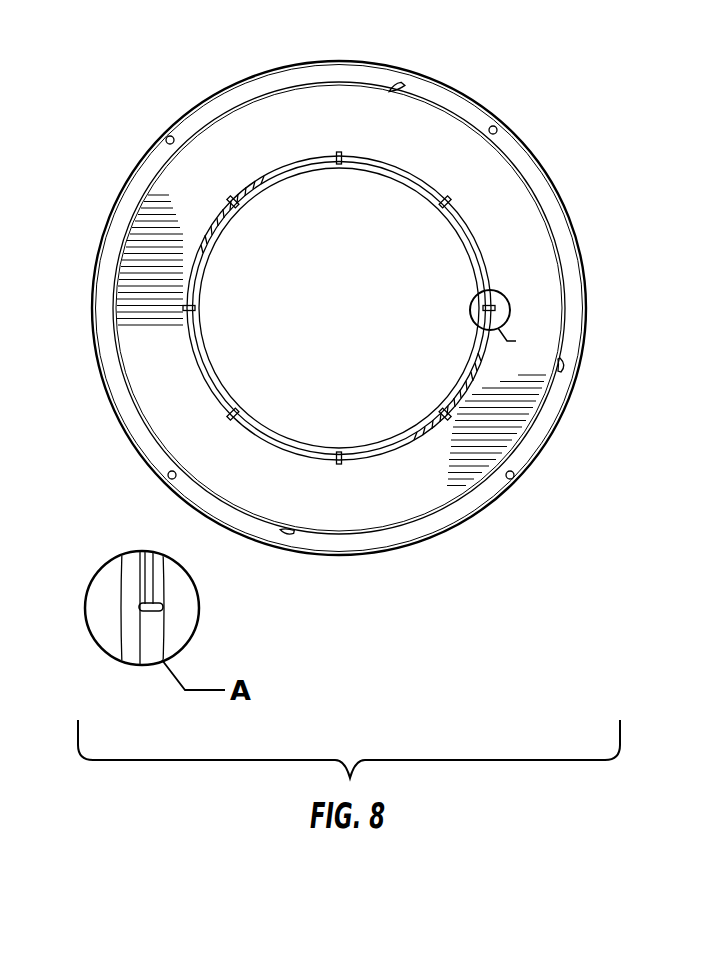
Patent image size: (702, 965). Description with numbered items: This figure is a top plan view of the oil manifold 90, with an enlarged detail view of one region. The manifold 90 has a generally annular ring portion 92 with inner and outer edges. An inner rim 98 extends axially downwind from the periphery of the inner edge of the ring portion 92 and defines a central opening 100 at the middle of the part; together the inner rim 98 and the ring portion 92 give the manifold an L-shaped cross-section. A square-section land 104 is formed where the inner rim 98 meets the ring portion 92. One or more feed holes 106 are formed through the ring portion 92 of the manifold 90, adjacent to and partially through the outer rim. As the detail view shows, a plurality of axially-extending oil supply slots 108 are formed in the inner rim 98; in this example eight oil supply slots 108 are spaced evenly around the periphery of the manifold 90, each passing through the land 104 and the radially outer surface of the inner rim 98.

The manifold 90 is at (480, 80).
The ring portion 92 is at (297, 141).
The inner rim 98 is at (133, 624).
The central opening 100 is at (238, 351).
The square-section land 104 is at (158, 630).
The feed hole 106 is at (398, 86).
The oil supply slot 108 is at (187, 306).